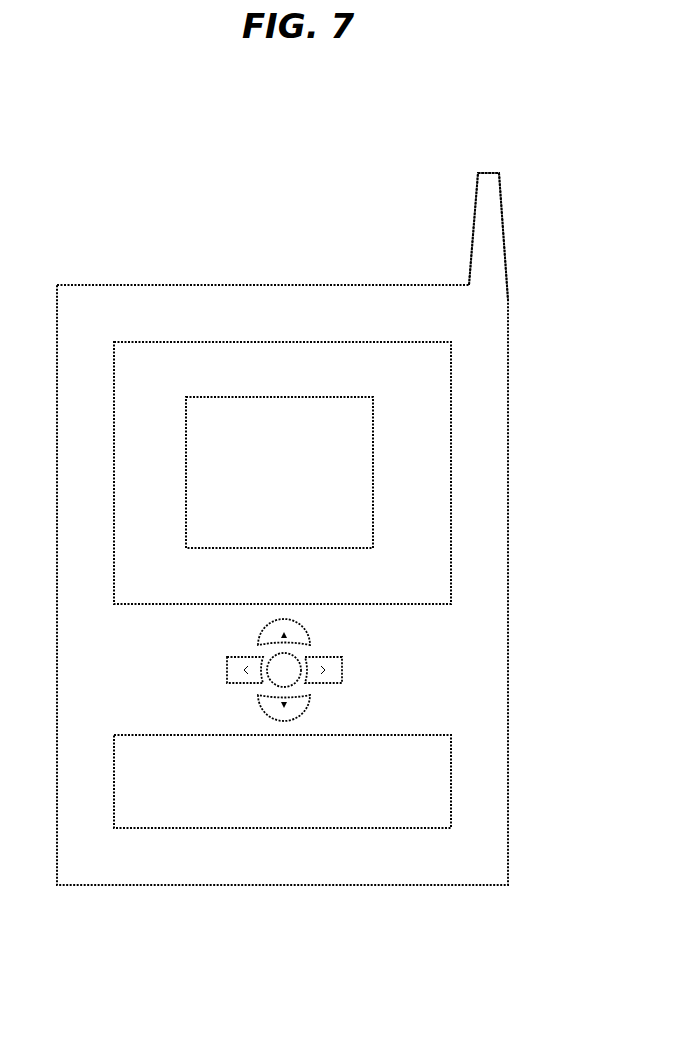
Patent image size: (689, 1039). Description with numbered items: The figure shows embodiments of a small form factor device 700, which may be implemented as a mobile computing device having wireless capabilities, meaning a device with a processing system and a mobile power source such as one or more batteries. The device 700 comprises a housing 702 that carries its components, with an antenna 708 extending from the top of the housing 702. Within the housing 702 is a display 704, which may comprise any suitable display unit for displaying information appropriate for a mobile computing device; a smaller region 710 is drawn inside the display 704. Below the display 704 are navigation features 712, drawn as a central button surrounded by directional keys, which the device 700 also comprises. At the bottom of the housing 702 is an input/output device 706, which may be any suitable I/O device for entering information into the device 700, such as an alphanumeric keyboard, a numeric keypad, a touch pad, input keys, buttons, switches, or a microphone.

The small form factor device 700 is at (319, 114).
The housing 702 is at (510, 620).
The display 704 is at (453, 404).
The input/output (I/O) device 706 is at (453, 788).
The antenna 708 is at (502, 218).
The display window 710 is at (183, 490).
The navigation features 712 is at (350, 655).